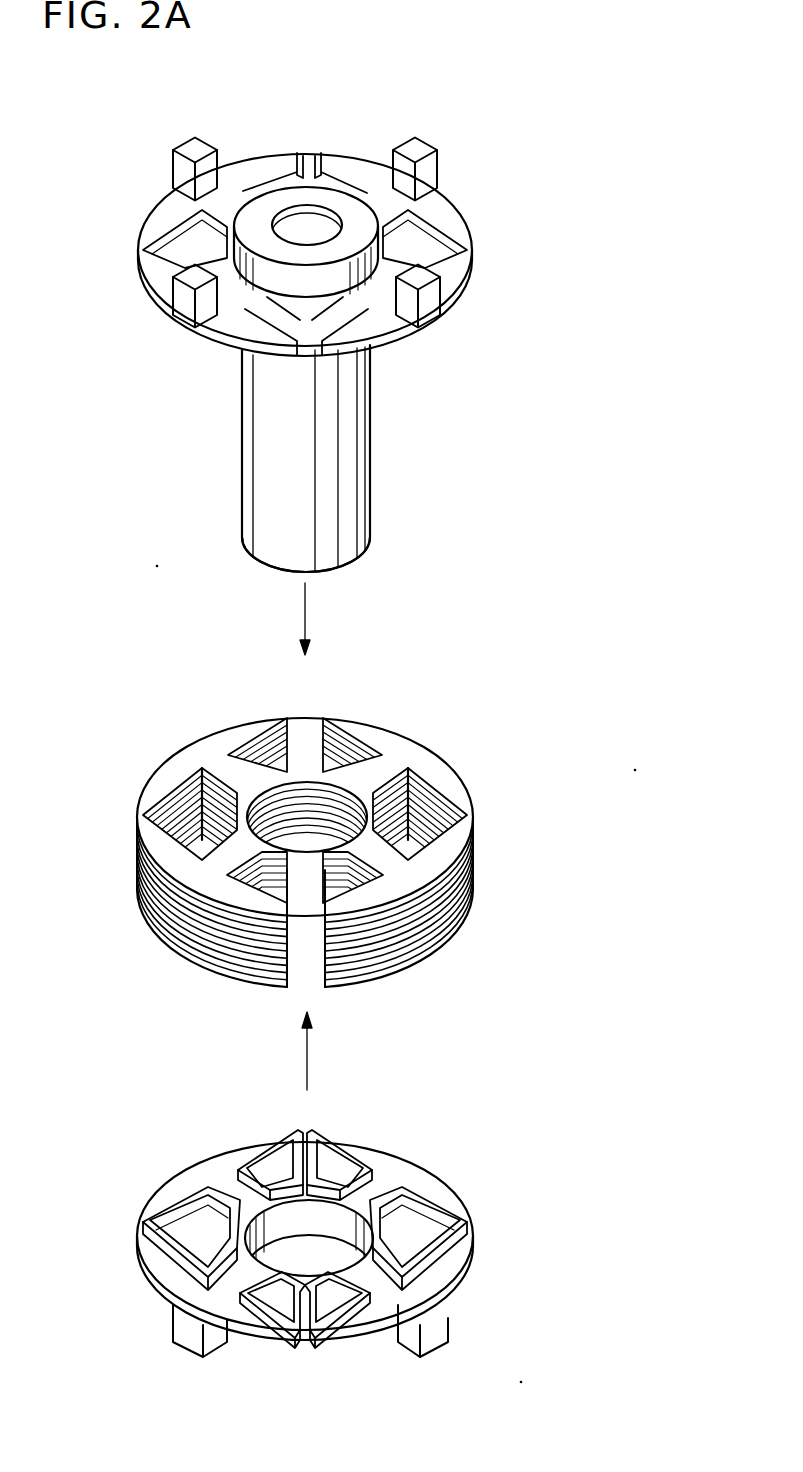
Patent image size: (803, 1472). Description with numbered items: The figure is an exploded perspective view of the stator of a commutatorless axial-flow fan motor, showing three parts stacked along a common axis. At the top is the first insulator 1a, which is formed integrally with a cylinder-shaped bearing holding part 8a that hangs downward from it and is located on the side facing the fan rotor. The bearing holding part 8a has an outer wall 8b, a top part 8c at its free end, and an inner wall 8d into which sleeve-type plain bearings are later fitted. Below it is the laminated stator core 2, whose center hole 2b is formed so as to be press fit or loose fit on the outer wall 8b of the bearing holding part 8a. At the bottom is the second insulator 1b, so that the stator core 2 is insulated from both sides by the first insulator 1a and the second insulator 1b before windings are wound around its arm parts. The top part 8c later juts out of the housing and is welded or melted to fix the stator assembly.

The first insulator 1a is at (339, 211).
The second insulator 1b is at (237, 1140).
The stator core 2 is at (313, 831).
The center hole 2b is at (318, 786).
The bearing holding part 8a is at (350, 480).
The outer wall 8b is at (370, 432).
The top part 8c is at (332, 570).
The inner wall 8d is at (300, 215).